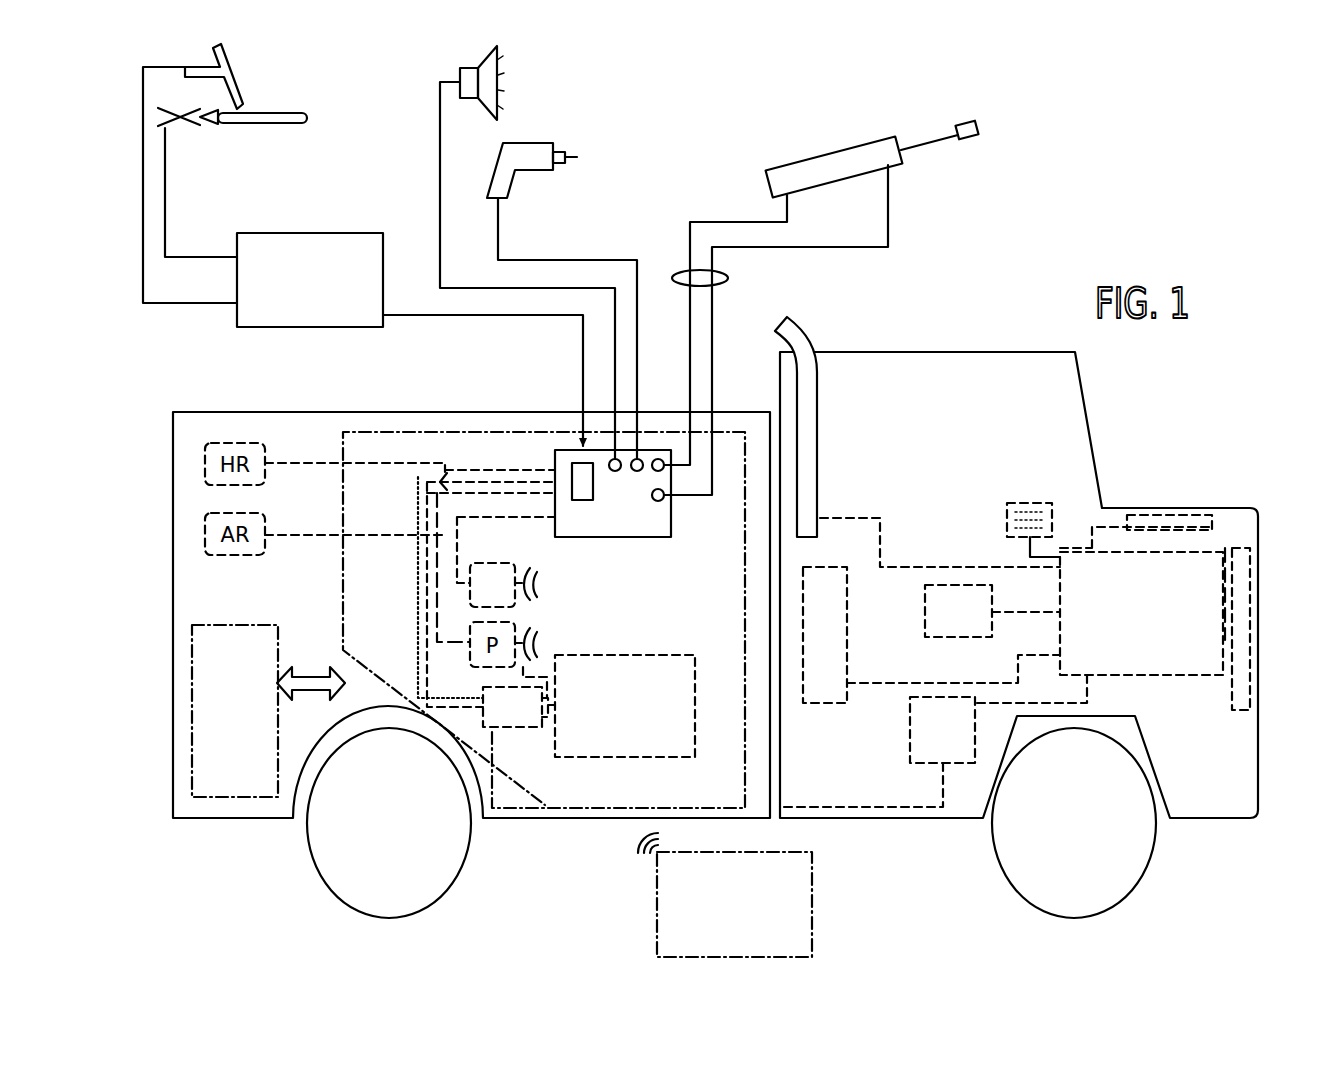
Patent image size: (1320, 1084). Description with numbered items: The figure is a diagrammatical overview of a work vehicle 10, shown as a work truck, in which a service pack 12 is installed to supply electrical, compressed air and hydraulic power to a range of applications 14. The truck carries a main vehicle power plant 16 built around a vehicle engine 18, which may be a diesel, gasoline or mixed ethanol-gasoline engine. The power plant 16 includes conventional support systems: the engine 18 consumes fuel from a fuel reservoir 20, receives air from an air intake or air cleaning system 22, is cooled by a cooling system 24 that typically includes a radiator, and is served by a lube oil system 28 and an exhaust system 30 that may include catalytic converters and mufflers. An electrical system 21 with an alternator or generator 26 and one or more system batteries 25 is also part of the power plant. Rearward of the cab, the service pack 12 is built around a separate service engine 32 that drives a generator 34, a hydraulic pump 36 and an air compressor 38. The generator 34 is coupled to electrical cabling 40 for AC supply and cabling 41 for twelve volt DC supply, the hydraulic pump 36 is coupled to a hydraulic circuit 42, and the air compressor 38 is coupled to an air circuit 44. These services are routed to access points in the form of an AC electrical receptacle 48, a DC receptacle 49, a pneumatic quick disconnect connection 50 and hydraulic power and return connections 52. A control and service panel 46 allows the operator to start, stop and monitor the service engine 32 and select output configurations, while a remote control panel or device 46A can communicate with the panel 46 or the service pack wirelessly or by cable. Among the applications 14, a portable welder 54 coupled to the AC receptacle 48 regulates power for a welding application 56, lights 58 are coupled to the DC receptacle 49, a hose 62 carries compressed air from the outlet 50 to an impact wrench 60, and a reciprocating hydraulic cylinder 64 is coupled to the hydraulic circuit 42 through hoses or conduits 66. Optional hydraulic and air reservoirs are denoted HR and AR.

The work vehicle 10 is at (237, 840).
The service pack 12 is at (343, 603).
The applications 14 is at (918, 214).
The main vehicle power plant 16 is at (1110, 438).
The vehicle engine 18 is at (1137, 673).
The fuel reservoir 20 is at (830, 703).
The engine compartment 21 is at (858, 773).
The air intake or air cleaning system 22 is at (1147, 513).
The cooling system 24 is at (1245, 710).
The battery 25 is at (927, 763).
The engine control unit 26 is at (1005, 517).
The lube oil system 28 is at (927, 605).
The exhaust system 30 is at (815, 452).
The service engine 32 is at (610, 655).
The generator 34 is at (510, 728).
The hydraulic pump 36 is at (487, 684).
The air compressor 38 is at (483, 563).
The electrical cabling 40 is at (420, 633).
The electrical cabling 41 is at (427, 677).
The hydraulic circuit 42 is at (437, 583).
The air circuit 44 is at (455, 530).
The control and service panel 46 is at (235, 625).
The remote control panel or device 46A is at (812, 903).
The electrical receptacle 48 is at (570, 470).
The electrical receptacle 49 is at (614, 457).
The pneumatic connection 50 is at (638, 457).
The hydraulic power and return connections 52 is at (664, 471).
The portable welder 54 is at (322, 233).
The welding application 56 is at (282, 112).
The lights 58 is at (465, 66).
The impact wrench 60 is at (533, 143).
The hose 62 is at (568, 260).
The reciprocating hydraulic cylinder 64 is at (835, 152).
The hoses or conduits 66 is at (678, 272).